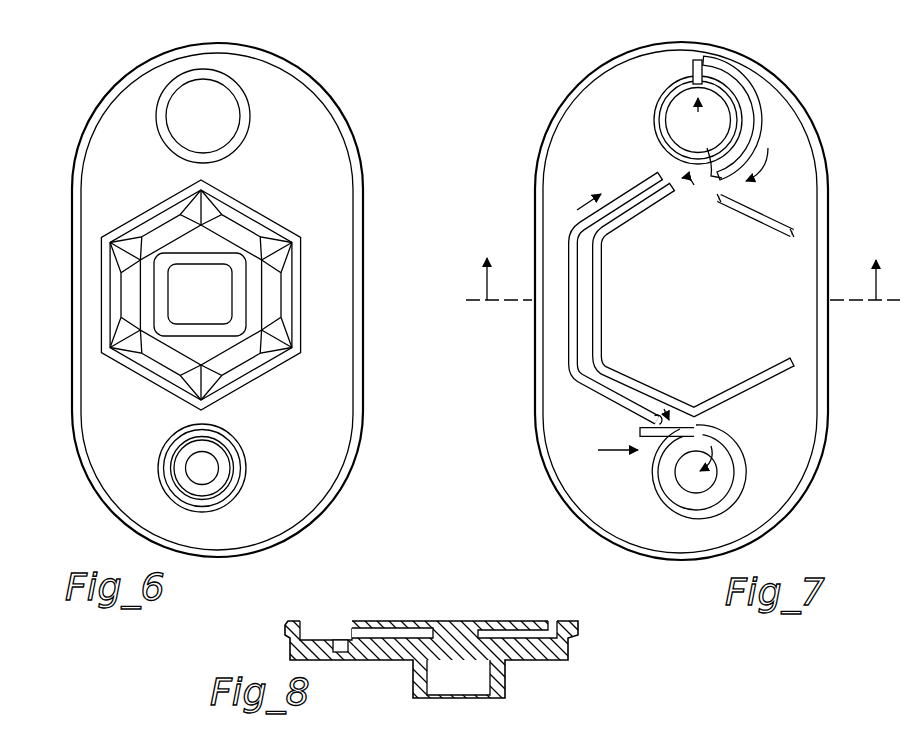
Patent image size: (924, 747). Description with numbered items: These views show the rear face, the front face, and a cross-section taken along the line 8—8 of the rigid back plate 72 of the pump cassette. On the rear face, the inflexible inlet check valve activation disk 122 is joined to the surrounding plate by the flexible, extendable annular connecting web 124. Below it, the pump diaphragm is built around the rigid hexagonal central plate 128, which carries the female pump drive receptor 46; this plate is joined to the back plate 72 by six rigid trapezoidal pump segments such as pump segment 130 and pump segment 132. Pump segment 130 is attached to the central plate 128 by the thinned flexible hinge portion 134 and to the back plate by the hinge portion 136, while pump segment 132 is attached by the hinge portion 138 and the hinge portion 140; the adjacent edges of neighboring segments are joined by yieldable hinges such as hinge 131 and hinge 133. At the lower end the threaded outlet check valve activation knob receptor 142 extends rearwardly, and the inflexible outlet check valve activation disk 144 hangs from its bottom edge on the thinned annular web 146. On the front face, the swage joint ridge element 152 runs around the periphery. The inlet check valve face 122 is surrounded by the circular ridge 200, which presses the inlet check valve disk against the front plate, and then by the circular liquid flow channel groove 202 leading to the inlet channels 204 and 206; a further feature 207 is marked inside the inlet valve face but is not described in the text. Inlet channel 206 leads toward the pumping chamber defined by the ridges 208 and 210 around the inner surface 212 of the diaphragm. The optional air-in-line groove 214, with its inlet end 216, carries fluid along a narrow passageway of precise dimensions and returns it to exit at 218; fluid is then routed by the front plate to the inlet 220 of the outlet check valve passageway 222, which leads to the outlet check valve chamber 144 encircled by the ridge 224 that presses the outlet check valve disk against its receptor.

In FIG. 7, the line 8— 8 is at (683, 298).
In FIG. 6, the female pump drive receptor 46 is at (231, 281).
In FIG. 6, the back plate 72 is at (70, 153).
In FIG. 7, the back plate 72 is at (838, 206).
In FIG. 6, the inlet check valve activation disk 122 is at (222, 126).
In FIG. 7, the inlet check valve activation disk 122 is at (686, 114).
In FIG. 6, the annular connecting web 124 is at (249, 121).
In FIG. 6, the central plate 128 is at (248, 305).
In FIG. 8, the central plate 128 is at (508, 665).
In FIG. 6, the pump segment 130 is at (258, 232).
In FIG. 6, the hinge 131 is at (197, 197).
In FIG. 6, the pump segment 132 is at (241, 350).
In FIG. 6, the hinge 133 is at (286, 253).
In FIG. 6, the hinge portion 134 is at (222, 233).
In FIG. 6, the hinge portion 136 is at (228, 194).
In FIG. 6, the hinge portion 138 is at (229, 377).
In FIG. 6, the hinge portion 140 is at (273, 362).
In FIG. 6, the outlet check valve activation knob receptor 142 is at (242, 487).
In FIG. 6, the outlet check valve activation disk 144 is at (211, 460).
In FIG. 7, the outlet check valve activation disk 144 is at (714, 478).
In FIG. 6, the annular web 146 is at (224, 470).
In FIG. 7, the swage joint ridge element 152 is at (808, 490).
In FIG. 8, the swage joint ridge element 152 is at (580, 632).
In FIG. 7, the circular ridge 200 is at (665, 102).
In FIG. 7, the circular liquid flow channel groove 202 is at (675, 87).
In FIG. 7, the inlet channel 204 is at (699, 60).
In FIG. 7, the inlet channel 206 is at (748, 93).
In FIG. 7, the channel outlet 207 is at (702, 150).
In FIG. 7, the ridge 208 is at (653, 212).
In FIG. 8, the ridge 208 is at (408, 630).
In FIG. 7, the ridge 210 is at (757, 220).
In FIG. 8, the ridge 210 is at (505, 632).
In FIG. 7, the inner surface of the pump diaphragm 212 is at (724, 339).
In FIG. 7, the groove 214 is at (574, 292).
In FIG. 8, the groove 214 is at (339, 640).
In FIG. 7, the inlet end 216 is at (700, 201).
In FIG. 7, the exit 218 is at (658, 170).
In FIG. 7, the inlet 220 is at (640, 433).
In FIG. 7, the outlet check valve passageway 222 is at (703, 441).
In FIG. 7, the ridge 224 is at (652, 489).